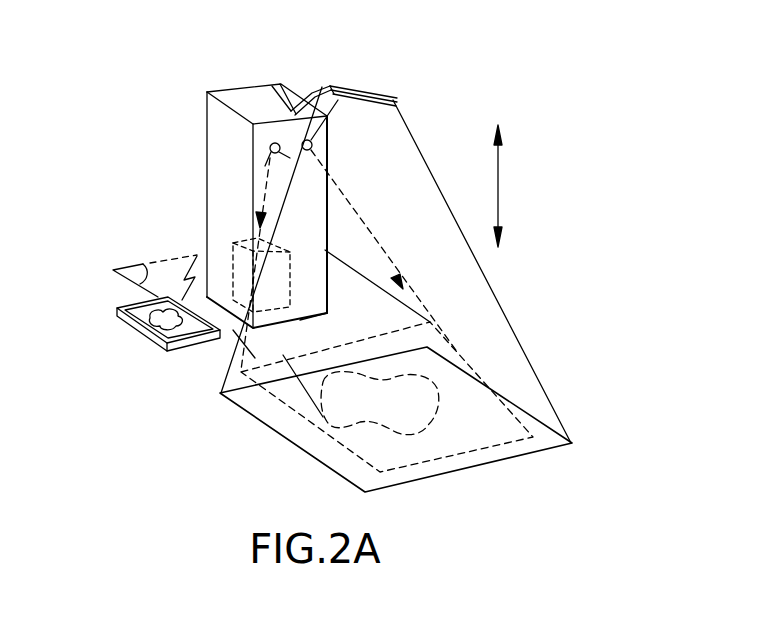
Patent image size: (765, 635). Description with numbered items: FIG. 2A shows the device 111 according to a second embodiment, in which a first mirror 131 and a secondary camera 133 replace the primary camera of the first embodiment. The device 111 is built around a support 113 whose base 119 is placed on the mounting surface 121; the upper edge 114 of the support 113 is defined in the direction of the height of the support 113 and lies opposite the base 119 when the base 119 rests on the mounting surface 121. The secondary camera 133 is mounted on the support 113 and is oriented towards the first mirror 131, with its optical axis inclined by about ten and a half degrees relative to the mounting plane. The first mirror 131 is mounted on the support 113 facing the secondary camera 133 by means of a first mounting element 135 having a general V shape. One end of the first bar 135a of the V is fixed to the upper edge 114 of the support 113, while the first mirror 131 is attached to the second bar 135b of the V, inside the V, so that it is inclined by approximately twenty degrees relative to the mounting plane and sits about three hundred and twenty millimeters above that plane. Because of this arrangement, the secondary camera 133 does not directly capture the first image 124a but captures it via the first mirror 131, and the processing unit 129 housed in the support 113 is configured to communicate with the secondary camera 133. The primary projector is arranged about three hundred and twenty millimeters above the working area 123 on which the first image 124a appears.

The device 111 is at (438, 99).
The support 113 is at (215, 165).
The upper edge 114 is at (210, 90).
The base 119 is at (327, 312).
The mounting surface 121 is at (143, 266).
The working area 123 is at (310, 438).
The first image 124a is at (463, 466).
The processing unit 129 is at (230, 240).
The first mirror 131 is at (376, 105).
The secondary camera 133 is at (312, 150).
The first mounting element 135 is at (326, 86).
The first bar 135a is at (291, 110).
The second bar 135b is at (370, 88).